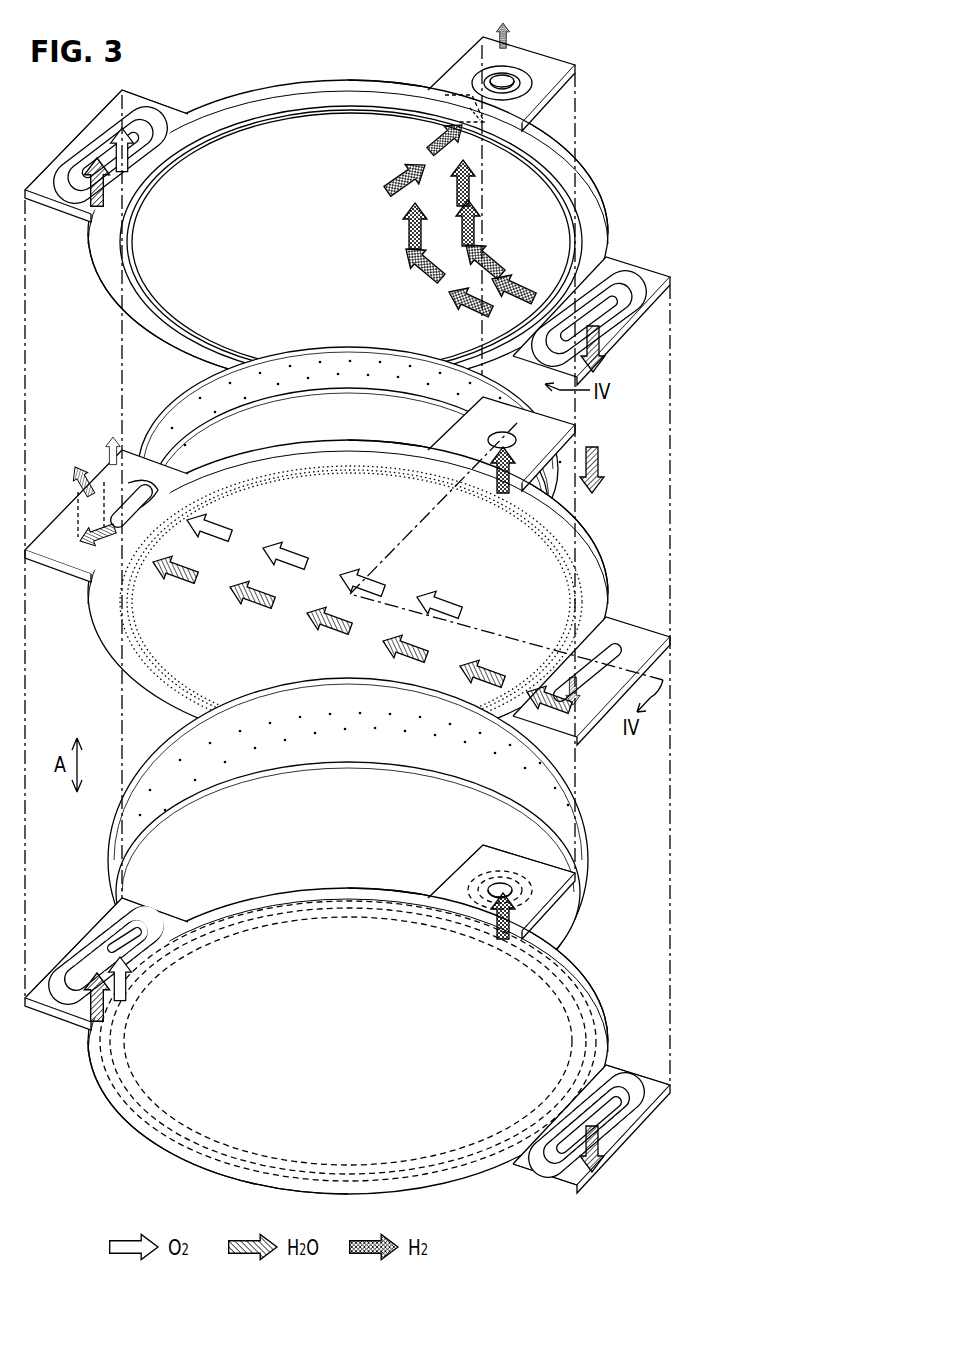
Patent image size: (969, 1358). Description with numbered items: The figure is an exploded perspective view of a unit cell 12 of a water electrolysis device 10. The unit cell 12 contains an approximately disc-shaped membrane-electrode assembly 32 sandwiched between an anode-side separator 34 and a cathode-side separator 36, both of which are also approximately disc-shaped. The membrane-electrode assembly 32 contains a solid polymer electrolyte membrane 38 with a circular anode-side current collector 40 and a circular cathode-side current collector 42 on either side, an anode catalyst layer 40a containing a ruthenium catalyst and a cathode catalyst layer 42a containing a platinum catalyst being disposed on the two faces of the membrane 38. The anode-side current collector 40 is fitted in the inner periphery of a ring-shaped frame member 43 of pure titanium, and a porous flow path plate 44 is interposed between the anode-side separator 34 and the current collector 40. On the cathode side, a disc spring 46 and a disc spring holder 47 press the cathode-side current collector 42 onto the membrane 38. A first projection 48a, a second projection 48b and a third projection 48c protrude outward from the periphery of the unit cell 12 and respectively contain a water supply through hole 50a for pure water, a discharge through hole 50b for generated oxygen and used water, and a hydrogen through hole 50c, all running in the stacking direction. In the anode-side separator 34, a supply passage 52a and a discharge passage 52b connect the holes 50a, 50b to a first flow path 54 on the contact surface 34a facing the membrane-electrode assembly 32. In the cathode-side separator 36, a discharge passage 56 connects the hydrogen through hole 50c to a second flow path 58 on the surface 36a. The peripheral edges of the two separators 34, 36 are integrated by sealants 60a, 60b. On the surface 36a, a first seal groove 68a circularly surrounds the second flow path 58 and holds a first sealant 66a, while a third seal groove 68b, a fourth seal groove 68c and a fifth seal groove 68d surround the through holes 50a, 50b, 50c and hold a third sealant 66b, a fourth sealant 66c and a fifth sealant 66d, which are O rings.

The fuel cell 10 is at (242, 66).
The unit cell 12 is at (204, 66).
The membrane-electrode assembly 32 is at (102, 663).
The anode-side separator 34 is at (113, 1132).
The contact surface of the anode-side separator 34a is at (252, 1183).
The cathode-side separator 36 is at (106, 317).
The surface of the cathode-side separator 36a is at (158, 345).
The solid polymer electrolyte membrane 38 is at (600, 566).
The anode-side current collector 40 is at (540, 779).
The anode catalyst layer 40a is at (538, 542).
The cathode-side current collector 42 is at (240, 447).
The cathode catalyst layer 42a is at (200, 693).
The frame member 43 is at (588, 818).
The flow path plate 44 is at (147, 866).
The disc spring 46 is at (348, 379).
The disc spring holder 47 is at (326, 372).
The first projection 48a is at (658, 1100).
The second projection 48b is at (110, 905).
The third projection 48c is at (540, 887).
The water supply through hole 50a is at (610, 1115).
The discharge through hole 50b is at (120, 948).
The hydrogen through hole 50c is at (497, 882).
The supply passage 52a is at (600, 1042).
The discharge passage 52b is at (196, 910).
The first flow path 54 is at (585, 972).
The discharge passage 56 is at (435, 80).
The second flow path 58 is at (182, 284).
The sealant 60a is at (592, 1005).
The sealant 60b is at (583, 172).
The first sealant 66a is at (238, 130).
The third sealant 66b is at (603, 345).
The fourth sealant 66c is at (60, 197).
The fifth sealant 66d is at (492, 105).
The first seal groove 68a is at (214, 118).
The third seal groove 68b is at (628, 320).
The fourth seal groove 68c is at (76, 232).
The fifth seal groove 68d is at (548, 60).